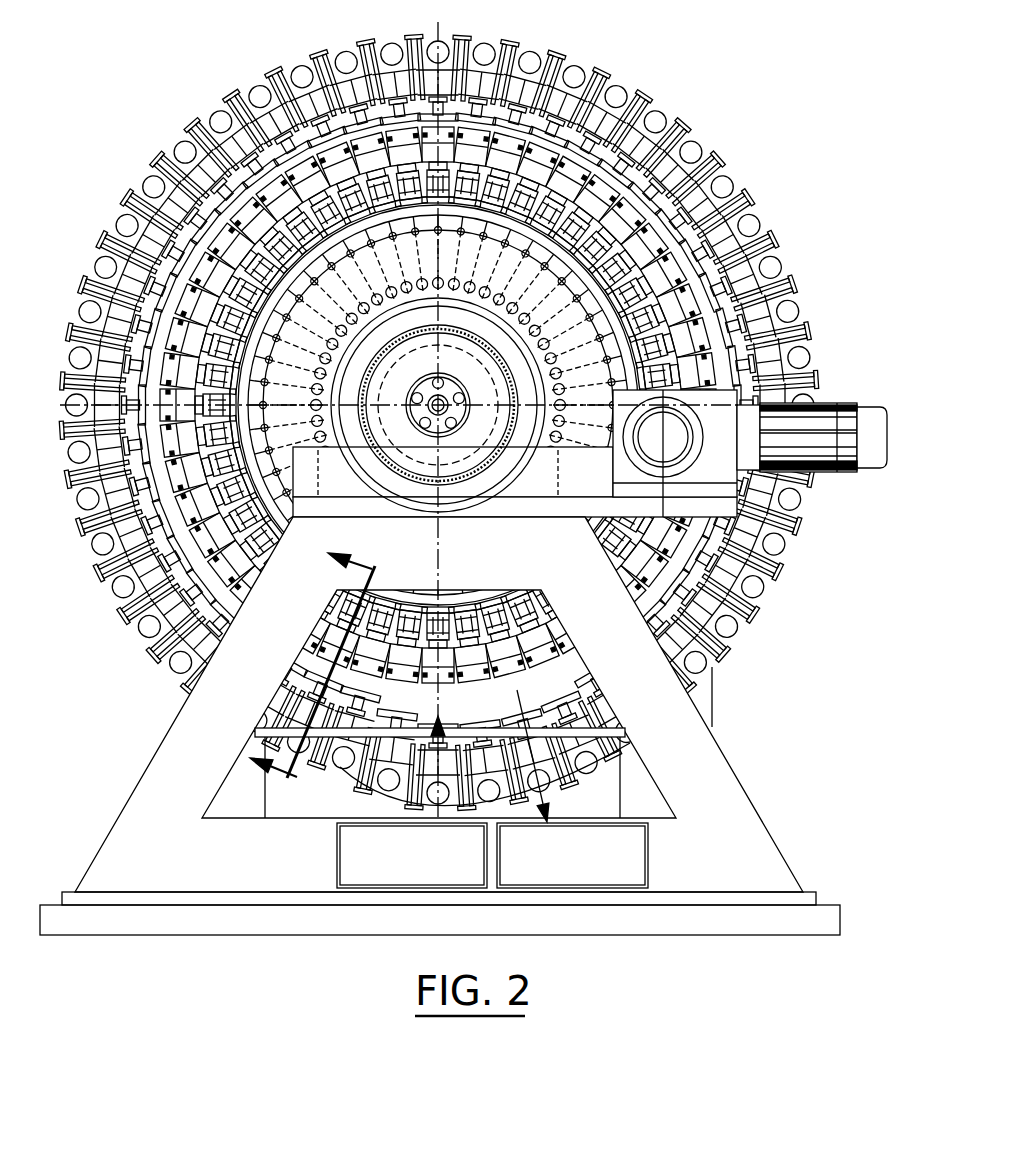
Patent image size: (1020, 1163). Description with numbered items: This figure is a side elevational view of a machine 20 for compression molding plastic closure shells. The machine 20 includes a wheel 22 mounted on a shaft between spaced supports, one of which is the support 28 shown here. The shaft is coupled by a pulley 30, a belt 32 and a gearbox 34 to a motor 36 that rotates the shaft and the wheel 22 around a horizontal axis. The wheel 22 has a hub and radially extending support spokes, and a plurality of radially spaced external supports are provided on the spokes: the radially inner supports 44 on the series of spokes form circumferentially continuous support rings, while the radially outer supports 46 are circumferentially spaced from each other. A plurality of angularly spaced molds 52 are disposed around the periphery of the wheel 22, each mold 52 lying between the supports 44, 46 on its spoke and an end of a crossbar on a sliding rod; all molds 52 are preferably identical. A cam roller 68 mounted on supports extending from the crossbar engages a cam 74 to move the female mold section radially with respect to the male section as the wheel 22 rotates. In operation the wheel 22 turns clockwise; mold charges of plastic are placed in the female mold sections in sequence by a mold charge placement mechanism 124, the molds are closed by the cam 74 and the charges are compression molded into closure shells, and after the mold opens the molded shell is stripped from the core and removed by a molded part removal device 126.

The machine 20 is at (463, 512).
The wheel 22 is at (668, 100).
The support 28 is at (737, 812).
The pulley 30 is at (458, 490).
The belt 32 is at (547, 488).
The gearbox 34 is at (718, 473).
The motor 36 is at (866, 410).
The radially inner supports 44 is at (195, 480).
The radially outer supports 46 is at (114, 260).
The molds 52 is at (740, 331).
The cam roller 68 is at (772, 220).
The cam 74 is at (705, 703).
The mold charge placement mechanism 124 is at (365, 888).
The molded part removal device 126 is at (636, 878).